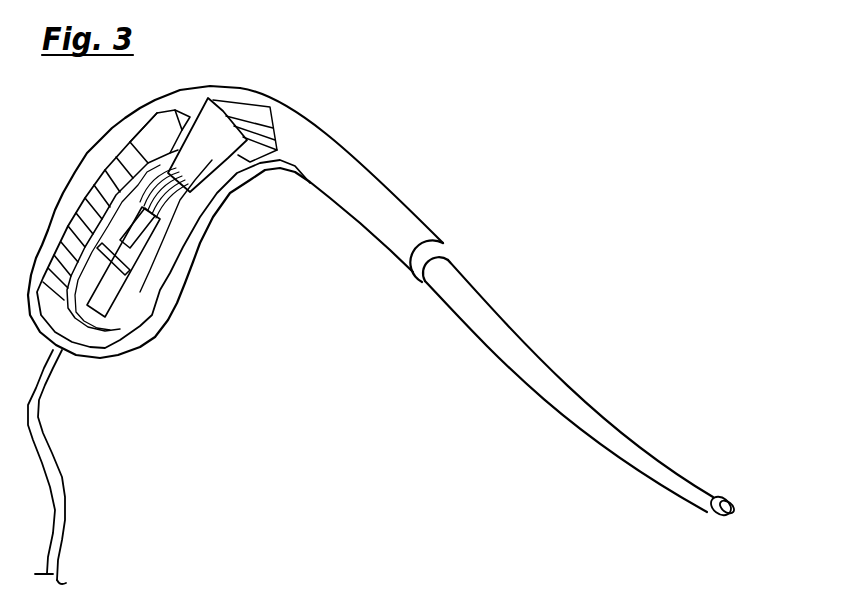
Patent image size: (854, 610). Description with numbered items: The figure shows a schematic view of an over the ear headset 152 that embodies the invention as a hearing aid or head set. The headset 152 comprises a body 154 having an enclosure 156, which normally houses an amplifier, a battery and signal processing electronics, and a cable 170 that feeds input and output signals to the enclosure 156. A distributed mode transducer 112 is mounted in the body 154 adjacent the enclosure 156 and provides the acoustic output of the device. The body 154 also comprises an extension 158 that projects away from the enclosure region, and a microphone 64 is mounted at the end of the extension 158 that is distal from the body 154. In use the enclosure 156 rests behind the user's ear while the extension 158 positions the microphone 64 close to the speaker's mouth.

The over the ear headset 152 is at (512, 211).
The body 154 is at (300, 133).
The enclosure 156 is at (217, 132).
The distributed mode transducer 112 is at (123, 240).
The extension 158 is at (507, 366).
The microphone 64 is at (710, 516).
The cable 170 is at (62, 477).